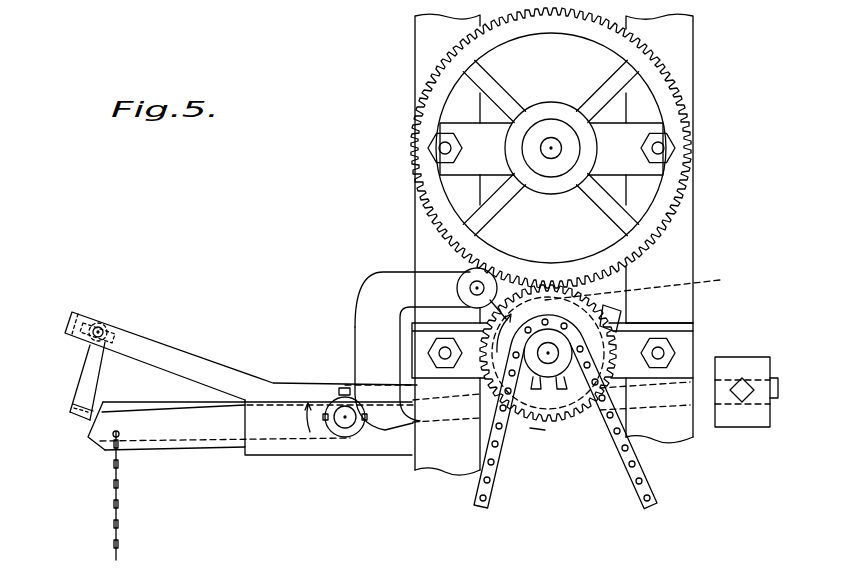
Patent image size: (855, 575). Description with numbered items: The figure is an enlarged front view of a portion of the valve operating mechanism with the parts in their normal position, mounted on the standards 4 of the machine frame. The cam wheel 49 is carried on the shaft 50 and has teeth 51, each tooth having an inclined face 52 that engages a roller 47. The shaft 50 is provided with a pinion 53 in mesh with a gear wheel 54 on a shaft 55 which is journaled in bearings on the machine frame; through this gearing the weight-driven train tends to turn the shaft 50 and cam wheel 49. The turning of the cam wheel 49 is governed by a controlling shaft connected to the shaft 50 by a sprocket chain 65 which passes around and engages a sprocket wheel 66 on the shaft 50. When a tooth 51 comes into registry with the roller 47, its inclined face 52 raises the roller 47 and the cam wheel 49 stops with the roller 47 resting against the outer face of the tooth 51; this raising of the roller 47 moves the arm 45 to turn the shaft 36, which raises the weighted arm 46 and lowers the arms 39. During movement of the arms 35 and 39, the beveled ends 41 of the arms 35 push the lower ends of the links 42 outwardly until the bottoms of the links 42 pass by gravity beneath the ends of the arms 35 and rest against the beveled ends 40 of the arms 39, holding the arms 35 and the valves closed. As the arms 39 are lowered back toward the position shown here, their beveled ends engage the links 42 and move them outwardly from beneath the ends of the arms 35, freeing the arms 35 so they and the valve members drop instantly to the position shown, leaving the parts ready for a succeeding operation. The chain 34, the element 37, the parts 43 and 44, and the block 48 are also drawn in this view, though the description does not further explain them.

The standard 4 is at (425, 45).
The chain 34 is at (112, 532).
The arm 35 is at (185, 400).
The shaft 36 is at (343, 422).
The frame member 37 is at (272, 445).
The arm 39 is at (188, 430).
The beveled end 40 is at (92, 425).
The beveled end 41 is at (88, 405).
The link 42 is at (90, 360).
The pivot pin 43 is at (100, 328).
The bar end 44 is at (75, 318).
The arm 45 is at (368, 326).
The weighted arm 46 is at (705, 397).
The roller 47 is at (455, 280).
The bearing block 48 is at (750, 415).
The cam wheel 49 is at (698, 283).
The shaft 50 is at (552, 360).
The tooth 51 is at (458, 288).
The inclined face 52 is at (505, 296).
The pinion 53 is at (497, 373).
The gear wheel 54 is at (677, 103).
The shaft 55 is at (553, 143).
The sprocket chain 65 is at (645, 490).
The sprocket wheel 66 is at (548, 338).